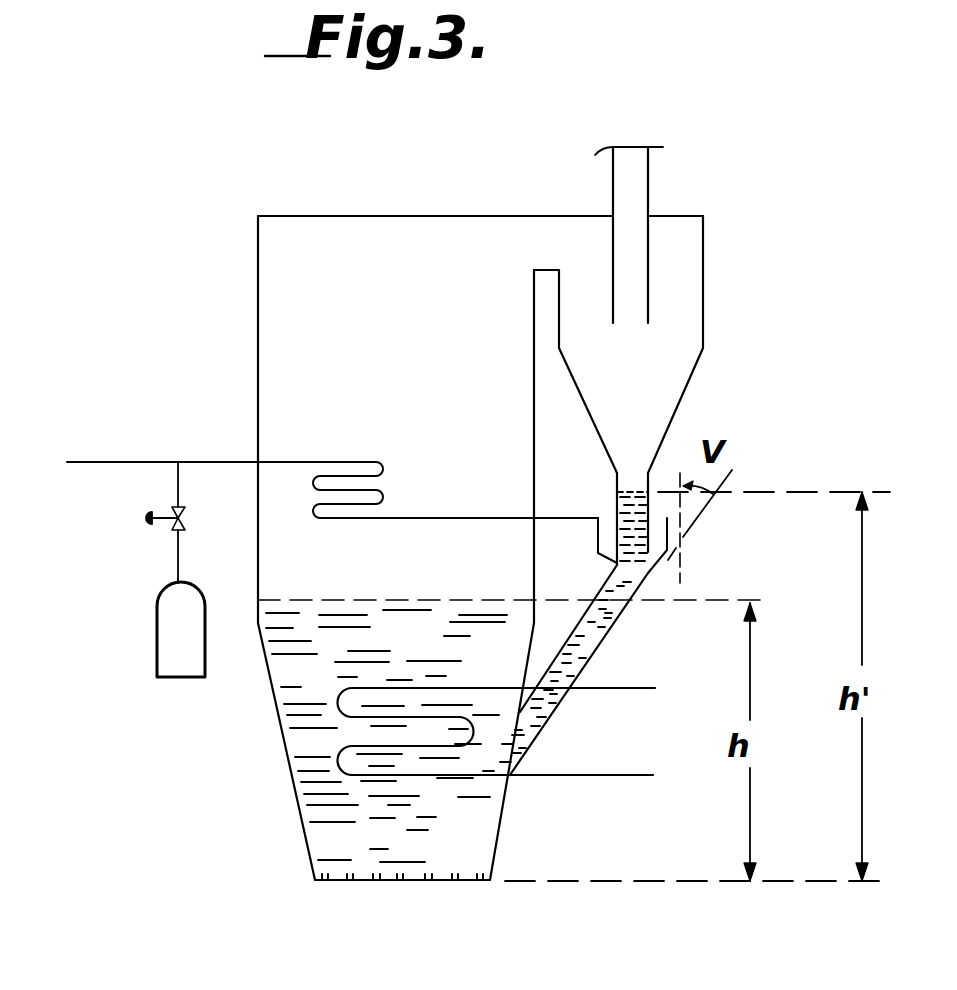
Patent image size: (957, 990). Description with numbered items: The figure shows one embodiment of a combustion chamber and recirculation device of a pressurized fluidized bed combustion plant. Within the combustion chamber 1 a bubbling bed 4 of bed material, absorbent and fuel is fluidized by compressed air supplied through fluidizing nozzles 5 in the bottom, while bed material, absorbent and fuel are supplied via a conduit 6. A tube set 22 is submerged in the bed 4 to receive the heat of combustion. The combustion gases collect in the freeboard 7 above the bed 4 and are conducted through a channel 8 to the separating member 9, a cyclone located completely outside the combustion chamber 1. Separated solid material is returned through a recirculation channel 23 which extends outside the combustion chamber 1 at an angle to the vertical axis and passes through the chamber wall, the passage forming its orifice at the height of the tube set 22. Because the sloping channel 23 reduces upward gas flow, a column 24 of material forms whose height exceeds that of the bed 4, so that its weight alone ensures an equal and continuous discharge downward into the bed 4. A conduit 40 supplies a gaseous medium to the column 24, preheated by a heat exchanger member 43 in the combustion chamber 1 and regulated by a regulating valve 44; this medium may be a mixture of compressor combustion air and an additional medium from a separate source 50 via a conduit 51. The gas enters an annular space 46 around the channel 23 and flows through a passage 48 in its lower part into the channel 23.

The combustion chamber 1 is at (362, 230).
The bed 4 is at (288, 703).
The fluidizing nozzles 5 is at (403, 880).
The conduit 6 is at (340, 813).
The freeboard 7 is at (413, 422).
The channel 8 is at (490, 276).
The separating member 9 is at (648, 383).
The tube set 22 is at (620, 689).
The channel 23 is at (618, 622).
The column of material 24 is at (570, 676).
The conduit 40 is at (172, 436).
The heat exchanger member 43 is at (350, 470).
The regulating valve 44 is at (250, 508).
The annular space 46 is at (613, 537).
The passage 48 is at (620, 557).
The separate external source 50 is at (193, 620).
The conduit 51 is at (178, 555).